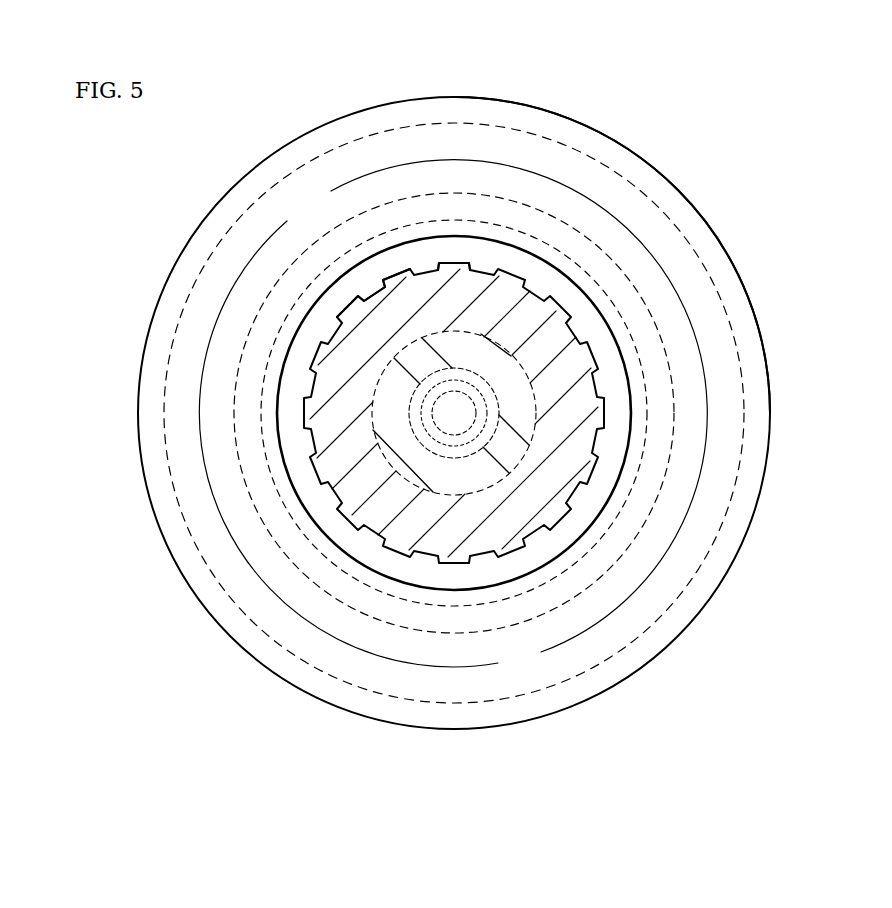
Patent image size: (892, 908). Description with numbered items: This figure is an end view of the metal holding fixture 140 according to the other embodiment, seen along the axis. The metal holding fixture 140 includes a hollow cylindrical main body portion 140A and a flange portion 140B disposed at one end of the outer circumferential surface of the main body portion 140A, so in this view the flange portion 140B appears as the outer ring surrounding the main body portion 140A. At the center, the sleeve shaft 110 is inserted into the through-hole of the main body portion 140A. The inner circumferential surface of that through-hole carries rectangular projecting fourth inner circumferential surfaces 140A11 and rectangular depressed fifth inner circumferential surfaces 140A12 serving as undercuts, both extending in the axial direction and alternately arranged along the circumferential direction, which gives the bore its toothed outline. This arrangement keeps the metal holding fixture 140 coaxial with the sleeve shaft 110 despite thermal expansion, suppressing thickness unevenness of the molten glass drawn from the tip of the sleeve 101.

The sleeve 101 is at (574, 38).
The sleeve shaft 110 is at (504, 533).
The metal holding fixture 140 is at (735, 80).
The main body portion 140A is at (560, 276).
The flange portion 140B is at (707, 222).
The fourth inner circumferential surface 140A11 is at (374, 302).
The fifth inner circumferential surface 140A12 is at (446, 259).